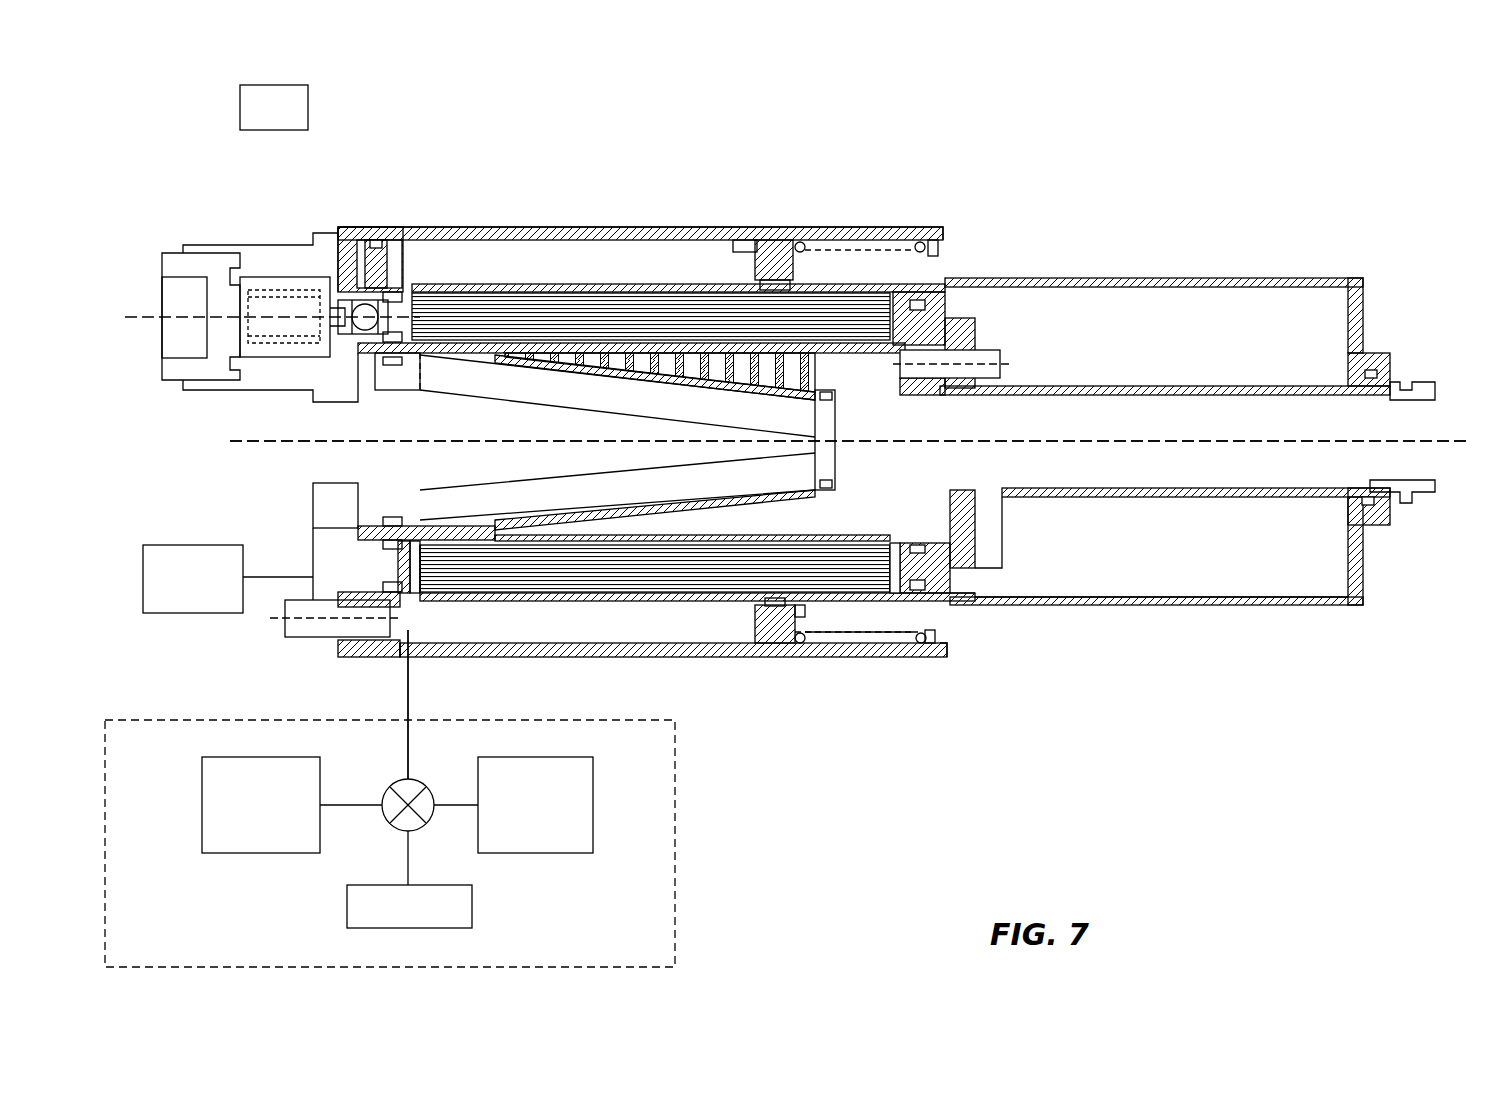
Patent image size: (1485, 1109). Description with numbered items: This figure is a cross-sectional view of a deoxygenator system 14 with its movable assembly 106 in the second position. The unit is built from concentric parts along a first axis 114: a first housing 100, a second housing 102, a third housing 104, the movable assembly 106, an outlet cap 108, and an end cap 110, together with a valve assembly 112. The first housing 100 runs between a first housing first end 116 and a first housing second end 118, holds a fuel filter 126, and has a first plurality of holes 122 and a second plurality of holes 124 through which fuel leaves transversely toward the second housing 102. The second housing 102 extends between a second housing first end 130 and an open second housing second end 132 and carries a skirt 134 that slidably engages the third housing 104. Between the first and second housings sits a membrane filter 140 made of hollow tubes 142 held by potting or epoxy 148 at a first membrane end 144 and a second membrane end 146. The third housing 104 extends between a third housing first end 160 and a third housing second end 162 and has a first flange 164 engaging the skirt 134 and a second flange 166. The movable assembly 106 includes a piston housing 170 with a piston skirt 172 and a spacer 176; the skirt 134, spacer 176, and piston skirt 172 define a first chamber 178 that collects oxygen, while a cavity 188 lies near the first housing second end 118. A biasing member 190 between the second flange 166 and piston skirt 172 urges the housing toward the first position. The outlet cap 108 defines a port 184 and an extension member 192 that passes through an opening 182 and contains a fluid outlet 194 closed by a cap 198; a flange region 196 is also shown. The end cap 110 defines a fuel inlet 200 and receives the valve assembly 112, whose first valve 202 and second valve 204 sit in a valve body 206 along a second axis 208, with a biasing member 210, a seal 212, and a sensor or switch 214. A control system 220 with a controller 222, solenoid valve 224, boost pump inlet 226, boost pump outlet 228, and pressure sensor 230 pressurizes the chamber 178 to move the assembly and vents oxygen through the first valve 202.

The deoxygenator system 14 is at (1066, 152).
The first housing 100 is at (900, 441).
The second housing 102 is at (970, 590).
The third housing 104 is at (905, 660).
The movable assembly 106 is at (1357, 275).
The outlet cap 108 is at (982, 330).
The end cap 110 is at (290, 548).
The valve assembly 112 is at (258, 240).
The first axis 114 is at (320, 437).
The first housing first end 116 is at (357, 530).
The first housing second end 118 is at (928, 385).
The first plurality of holes 122 is at (815, 360).
The second plurality of holes 124 is at (845, 380).
The fuel filter 126 is at (460, 400).
The second housing first end 130 is at (407, 603).
The second housing second end 132 is at (975, 600).
The skirt 134 is at (395, 642).
The membrane filter 140 is at (745, 565).
The hollow tubes 142 is at (783, 298).
The first membrane end 144 is at (490, 565).
The second membrane end 146 is at (832, 560).
The potting or epoxy 148 is at (445, 565).
The third housing first end 160 is at (340, 652).
The third housing second end 162 is at (940, 645).
The first flange 164 is at (345, 632).
The second flange 166 is at (950, 625).
The piston housing 170 is at (1135, 608).
The piston skirt 172 is at (808, 650).
The spacer 176 is at (758, 645).
The first chamber 178 is at (605, 650).
The opening 182 is at (1390, 388).
The port 184 is at (940, 300).
The cavity 188 is at (1292, 578).
The biasing member 190 is at (850, 622).
The extension member 192 is at (1195, 505).
The fluid outlet 194 is at (1270, 490).
The flange 196 is at (990, 497).
The cap 198 is at (1420, 502).
The fuel inlet 200 is at (330, 483).
The first valve 202 is at (385, 292).
The second valve 204 is at (292, 245).
The valve body 206 is at (207, 243).
The second axis 208 is at (145, 300).
The biasing member 210 is at (262, 300).
The seal 212 is at (165, 383).
The sensor or switch 214 is at (273, 245).
The control system 220 is at (688, 877).
The controller 222 is at (472, 907).
The solenoid valve 224 is at (422, 782).
The boost pump inlet 226 is at (557, 853).
The boost pump outlet 228 is at (245, 855).
The pressure sensor 230 is at (198, 610).